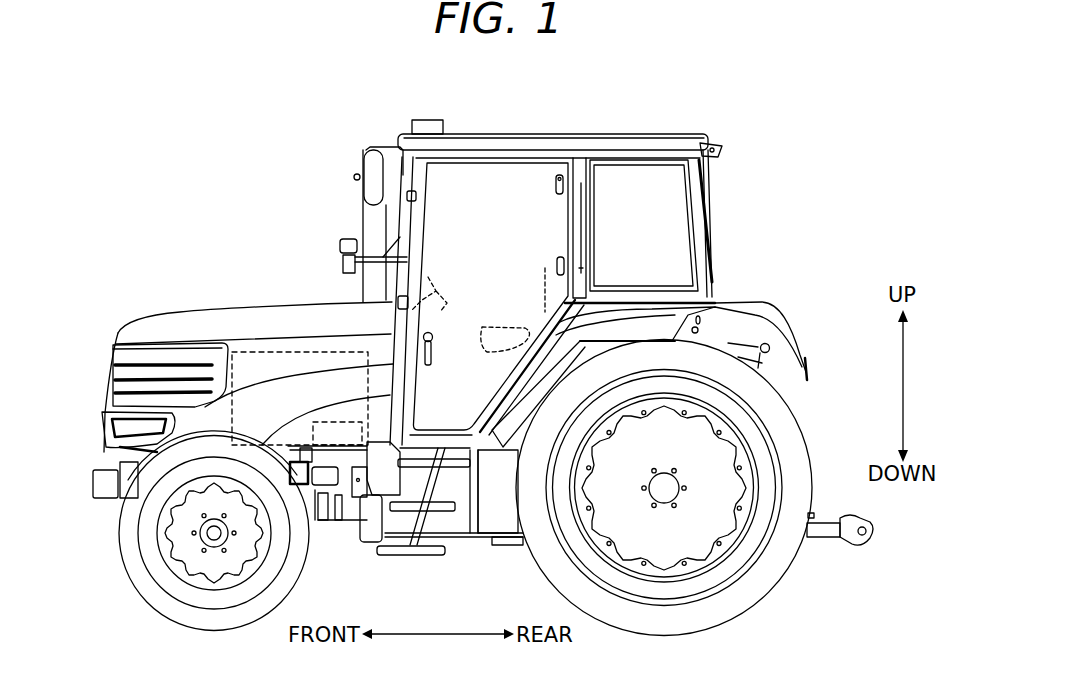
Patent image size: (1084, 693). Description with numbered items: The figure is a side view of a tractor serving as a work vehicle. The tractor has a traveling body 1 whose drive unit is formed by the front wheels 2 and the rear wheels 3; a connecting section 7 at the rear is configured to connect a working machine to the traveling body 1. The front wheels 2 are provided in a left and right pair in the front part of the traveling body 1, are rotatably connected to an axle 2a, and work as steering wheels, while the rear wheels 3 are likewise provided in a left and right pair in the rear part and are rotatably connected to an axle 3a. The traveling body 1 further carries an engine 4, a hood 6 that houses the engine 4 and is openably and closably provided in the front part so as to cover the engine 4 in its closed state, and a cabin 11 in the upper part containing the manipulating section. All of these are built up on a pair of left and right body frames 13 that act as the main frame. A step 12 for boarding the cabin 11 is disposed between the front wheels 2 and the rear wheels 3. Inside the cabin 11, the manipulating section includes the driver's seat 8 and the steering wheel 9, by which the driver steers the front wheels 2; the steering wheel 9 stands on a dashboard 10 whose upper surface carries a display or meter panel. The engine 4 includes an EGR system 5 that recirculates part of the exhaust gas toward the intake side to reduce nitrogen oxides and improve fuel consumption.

The traveling body 1 is at (787, 121).
The front wheels 2 is at (304, 583).
The axle 2a is at (205, 536).
The rear wheels 3 is at (778, 585).
The axle 3a is at (658, 487).
The engine 4 is at (268, 351).
The EGR system 5 is at (318, 422).
The hood 6 is at (297, 302).
The connecting section 7 is at (848, 520).
The driver's seat 8 is at (553, 268).
The steering wheel 9 is at (416, 292).
The dashboard 10 is at (418, 327).
The cabin 11 is at (630, 140).
The step 12 is at (453, 559).
The body frames 13 is at (122, 475).